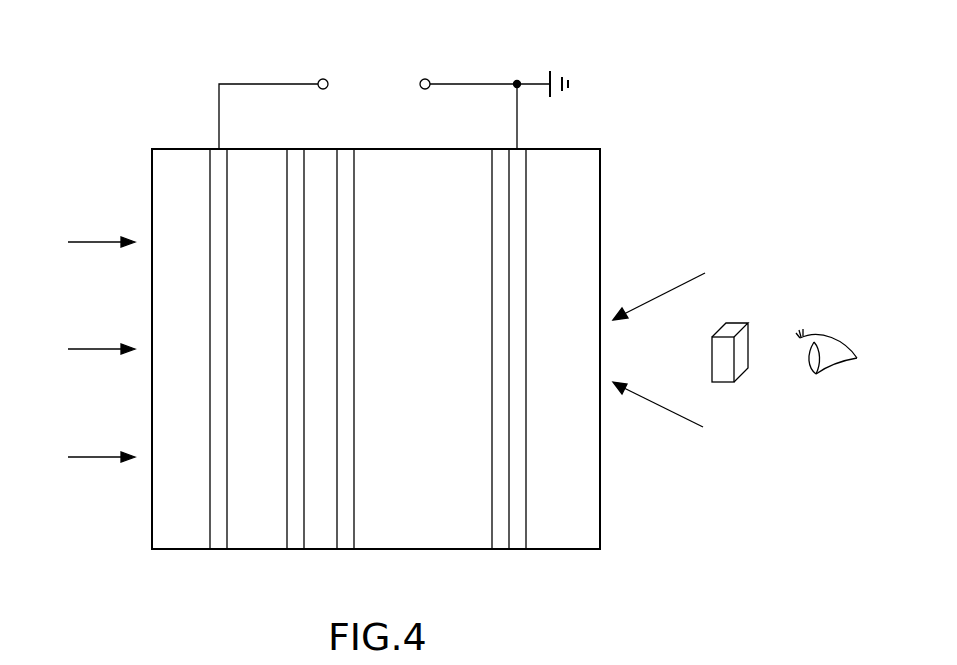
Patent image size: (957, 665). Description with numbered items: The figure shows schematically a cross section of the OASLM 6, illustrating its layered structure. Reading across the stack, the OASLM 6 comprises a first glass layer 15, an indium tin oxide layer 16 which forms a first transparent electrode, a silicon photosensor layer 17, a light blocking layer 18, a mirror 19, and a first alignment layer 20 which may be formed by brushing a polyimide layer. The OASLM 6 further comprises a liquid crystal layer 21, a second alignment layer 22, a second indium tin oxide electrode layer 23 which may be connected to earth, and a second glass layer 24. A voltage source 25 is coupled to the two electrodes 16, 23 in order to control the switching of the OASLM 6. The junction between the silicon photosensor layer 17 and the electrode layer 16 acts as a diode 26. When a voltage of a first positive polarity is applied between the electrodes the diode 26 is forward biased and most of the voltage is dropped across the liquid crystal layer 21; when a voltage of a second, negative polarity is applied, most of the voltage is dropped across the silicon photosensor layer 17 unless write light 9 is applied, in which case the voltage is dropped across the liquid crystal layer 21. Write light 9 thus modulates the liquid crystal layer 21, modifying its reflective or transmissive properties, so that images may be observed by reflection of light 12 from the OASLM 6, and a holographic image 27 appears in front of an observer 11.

The OASLM 6 is at (146, 159).
The write light 9 is at (96, 240).
The observer 11 is at (827, 330).
The reflected light 12 is at (658, 293).
The first glass layer 15 is at (173, 542).
The indium tin oxide layer 16 is at (217, 542).
The silicon photosensor layer 17 is at (248, 542).
The light blocking layer 18 is at (293, 542).
The mirror 19 is at (321, 542).
The first alignment layer 20 is at (347, 542).
The liquid crystal layer 21 is at (427, 542).
The second alignment layer 22 is at (500, 542).
The second indium tin oxide electrode layer 23 is at (518, 542).
The second glass layer 24 is at (573, 542).
The voltage source 25 is at (378, 72).
The diode 26 is at (227, 218).
The holographic image 27 is at (738, 322).